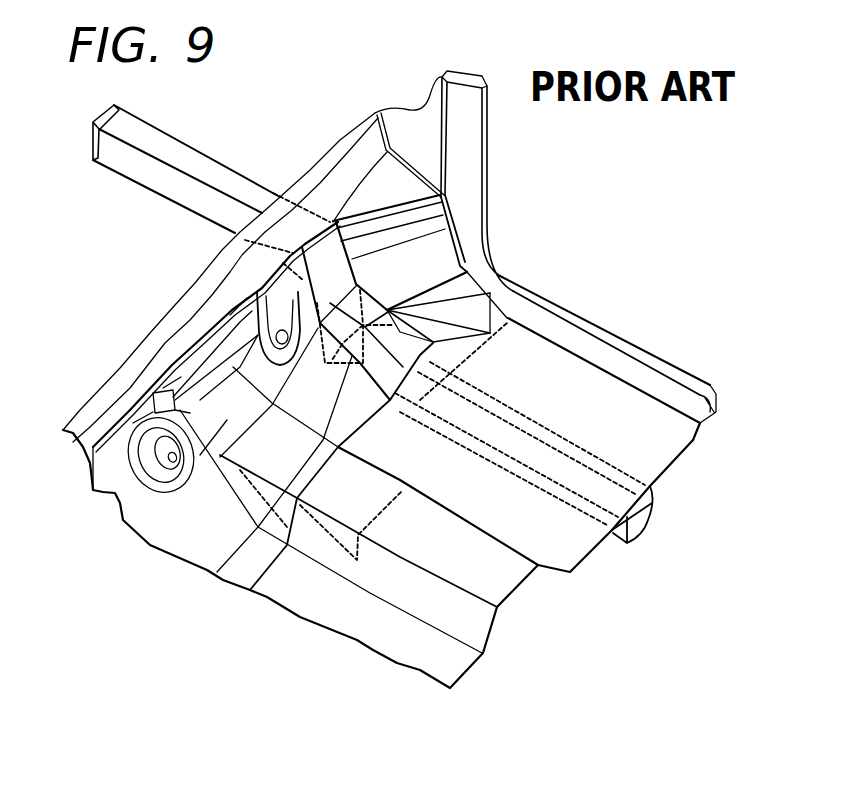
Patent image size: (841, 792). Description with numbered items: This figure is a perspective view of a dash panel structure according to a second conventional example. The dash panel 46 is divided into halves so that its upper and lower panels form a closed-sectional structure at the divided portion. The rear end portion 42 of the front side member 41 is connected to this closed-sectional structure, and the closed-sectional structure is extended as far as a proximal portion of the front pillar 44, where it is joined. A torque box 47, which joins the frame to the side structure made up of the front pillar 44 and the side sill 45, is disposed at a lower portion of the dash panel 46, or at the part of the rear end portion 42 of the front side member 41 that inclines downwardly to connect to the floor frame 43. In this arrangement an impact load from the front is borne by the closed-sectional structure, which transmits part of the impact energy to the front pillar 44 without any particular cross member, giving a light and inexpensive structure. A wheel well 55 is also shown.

The front side member 41 is at (183, 160).
The rear end portion 42 is at (335, 288).
The floor frame 43 is at (637, 515).
The front pillar 44 is at (467, 142).
The side sill 45 is at (600, 353).
The dash panel 46 is at (237, 270).
The torque box 47 is at (458, 308).
The wheel well 55 is at (420, 248).